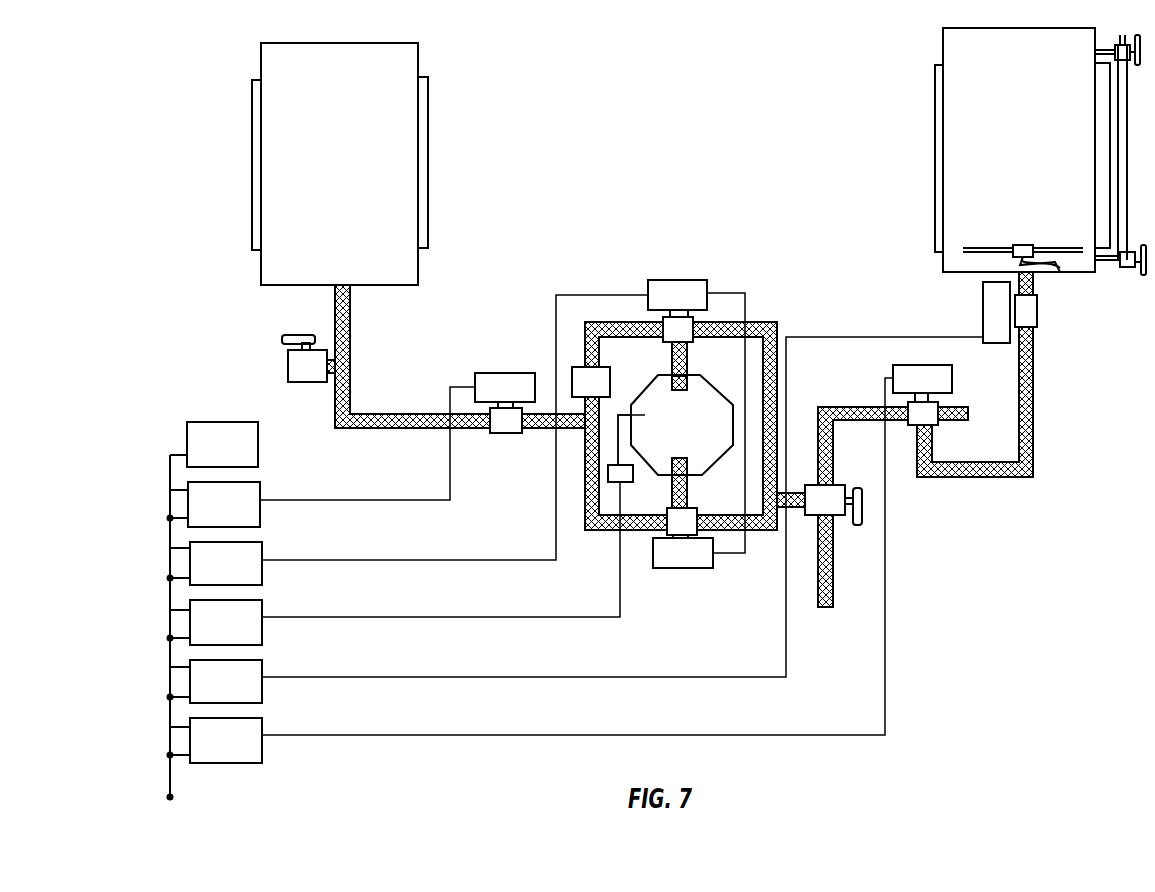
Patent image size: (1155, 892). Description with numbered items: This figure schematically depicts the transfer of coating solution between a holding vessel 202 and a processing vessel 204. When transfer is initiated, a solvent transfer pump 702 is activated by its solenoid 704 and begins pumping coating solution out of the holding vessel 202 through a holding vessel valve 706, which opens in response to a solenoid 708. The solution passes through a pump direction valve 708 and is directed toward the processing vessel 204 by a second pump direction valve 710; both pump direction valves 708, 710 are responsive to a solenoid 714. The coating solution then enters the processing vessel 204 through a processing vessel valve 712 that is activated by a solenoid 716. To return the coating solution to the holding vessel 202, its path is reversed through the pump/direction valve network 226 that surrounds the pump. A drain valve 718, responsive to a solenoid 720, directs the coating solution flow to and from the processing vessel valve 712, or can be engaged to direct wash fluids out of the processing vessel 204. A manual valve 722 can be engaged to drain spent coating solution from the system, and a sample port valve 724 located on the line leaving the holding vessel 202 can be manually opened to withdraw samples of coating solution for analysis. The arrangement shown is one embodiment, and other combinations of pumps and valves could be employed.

The holding vessel 202 is at (263, 165).
The processing vessel 204 is at (948, 152).
The pump/direction valve network 226 is at (757, 320).
The solvent transfer pump 702 is at (667, 373).
The solenoid 704 is at (262, 610).
The holding vessel valve 706 is at (508, 373).
The pump direction valve 708 is at (682, 568).
The pump direction valve 710 is at (678, 280).
The processing vessel valve 712 is at (983, 310).
The solenoid 714 is at (262, 552).
The solenoid 716 is at (262, 670).
The drain valve 718 is at (953, 378).
The solenoid 720 is at (262, 728).
The manual valve 722 is at (838, 518).
The sample port valve 724 is at (288, 365).